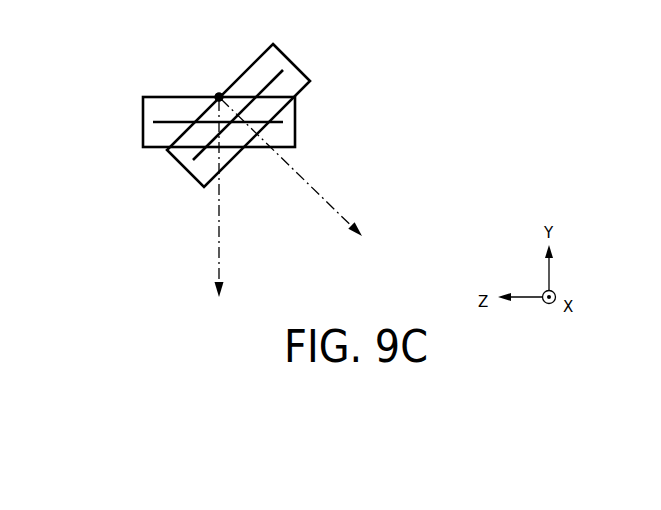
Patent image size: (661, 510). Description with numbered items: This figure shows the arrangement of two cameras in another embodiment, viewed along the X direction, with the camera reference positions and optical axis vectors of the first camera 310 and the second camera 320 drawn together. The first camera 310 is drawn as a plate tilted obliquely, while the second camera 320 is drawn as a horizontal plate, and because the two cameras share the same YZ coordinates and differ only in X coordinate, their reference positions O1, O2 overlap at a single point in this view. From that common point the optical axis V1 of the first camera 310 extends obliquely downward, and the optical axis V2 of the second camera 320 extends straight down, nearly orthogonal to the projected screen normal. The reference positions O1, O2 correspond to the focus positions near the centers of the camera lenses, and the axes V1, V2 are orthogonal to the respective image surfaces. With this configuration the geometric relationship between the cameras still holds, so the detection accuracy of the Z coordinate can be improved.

The first camera 310 is at (285, 56).
The second camera 320 is at (295, 110).
The camera reference position O1 is at (219, 92).
The camera reference position O2 is at (219, 92).
The optical axis V1 is at (308, 175).
The optical axis V2 is at (215, 214).